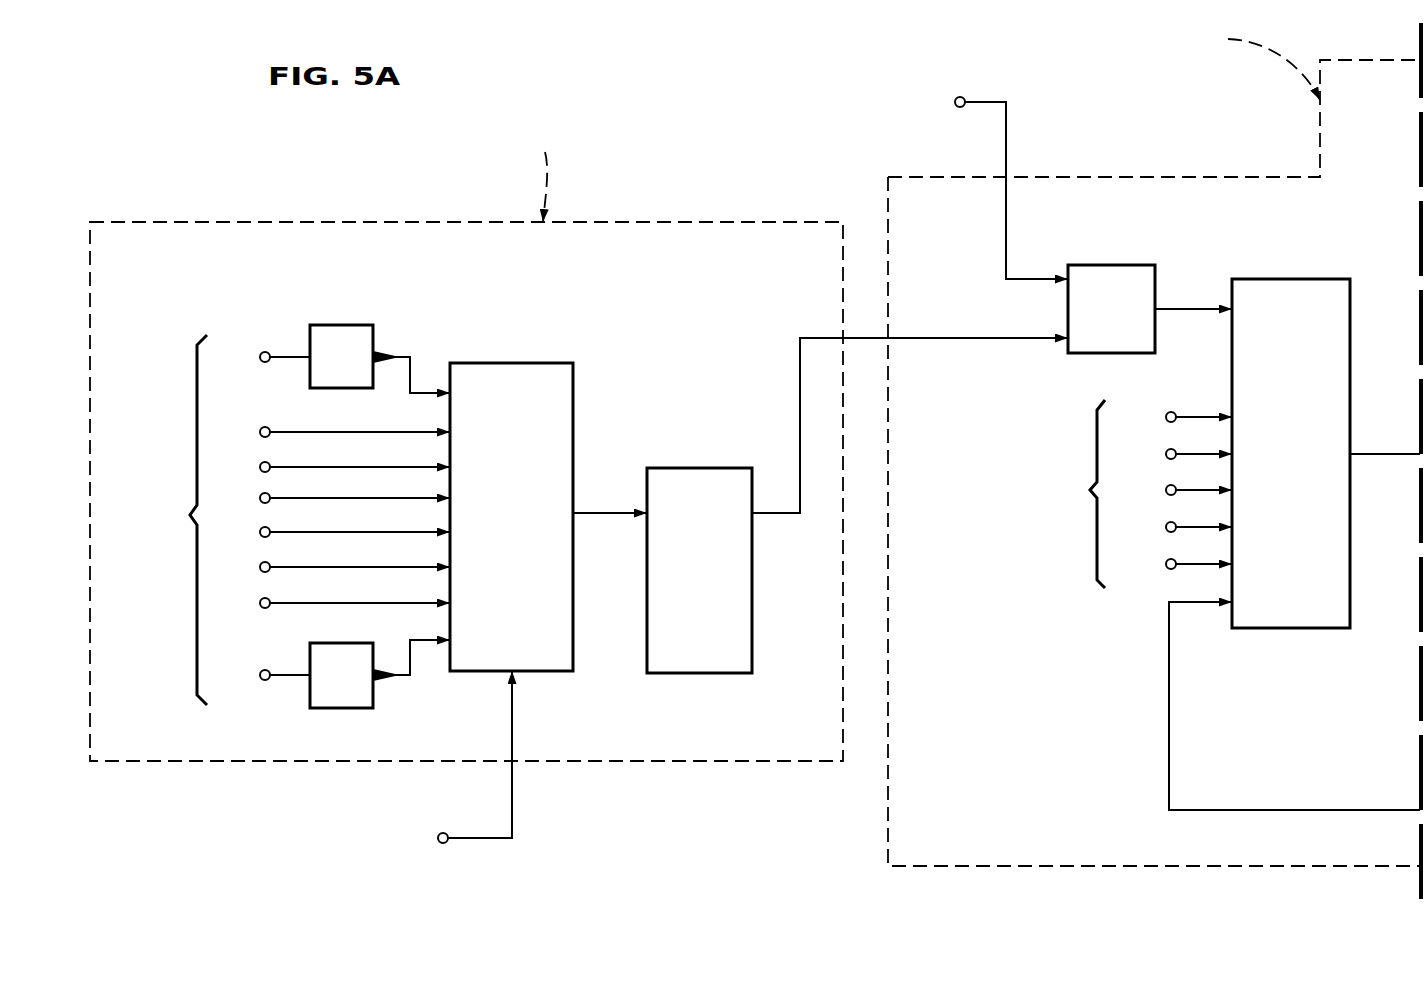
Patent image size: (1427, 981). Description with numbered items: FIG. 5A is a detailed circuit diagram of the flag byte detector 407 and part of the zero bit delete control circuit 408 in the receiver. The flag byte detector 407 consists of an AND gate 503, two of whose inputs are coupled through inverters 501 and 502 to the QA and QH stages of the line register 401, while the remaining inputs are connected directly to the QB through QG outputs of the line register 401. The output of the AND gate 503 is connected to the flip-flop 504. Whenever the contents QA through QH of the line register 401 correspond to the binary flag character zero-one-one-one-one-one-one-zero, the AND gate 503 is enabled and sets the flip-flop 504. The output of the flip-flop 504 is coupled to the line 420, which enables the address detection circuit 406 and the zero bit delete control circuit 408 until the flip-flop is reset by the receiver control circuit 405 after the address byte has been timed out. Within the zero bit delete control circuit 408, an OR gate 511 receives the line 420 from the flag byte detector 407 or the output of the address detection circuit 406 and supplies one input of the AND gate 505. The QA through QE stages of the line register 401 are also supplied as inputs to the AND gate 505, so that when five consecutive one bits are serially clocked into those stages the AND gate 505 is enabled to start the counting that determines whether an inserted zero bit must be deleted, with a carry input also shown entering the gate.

The line register 401 is at (640, 520).
The receiver control circuit 405 is at (326, 771).
The address detection circuit 406 is at (882, 179).
The flag byte detector 407 is at (765, 222).
The zero bit delete control circuit 408 is at (1237, 177).
The line 420 is at (968, 338).
The inverter 501 is at (354, 325).
The inverter 502 is at (352, 708).
The AND gate 503 is at (524, 363).
The flip-flop 504 is at (676, 468).
The AND gate 505 is at (1290, 279).
The OR gate 511 is at (1097, 265).